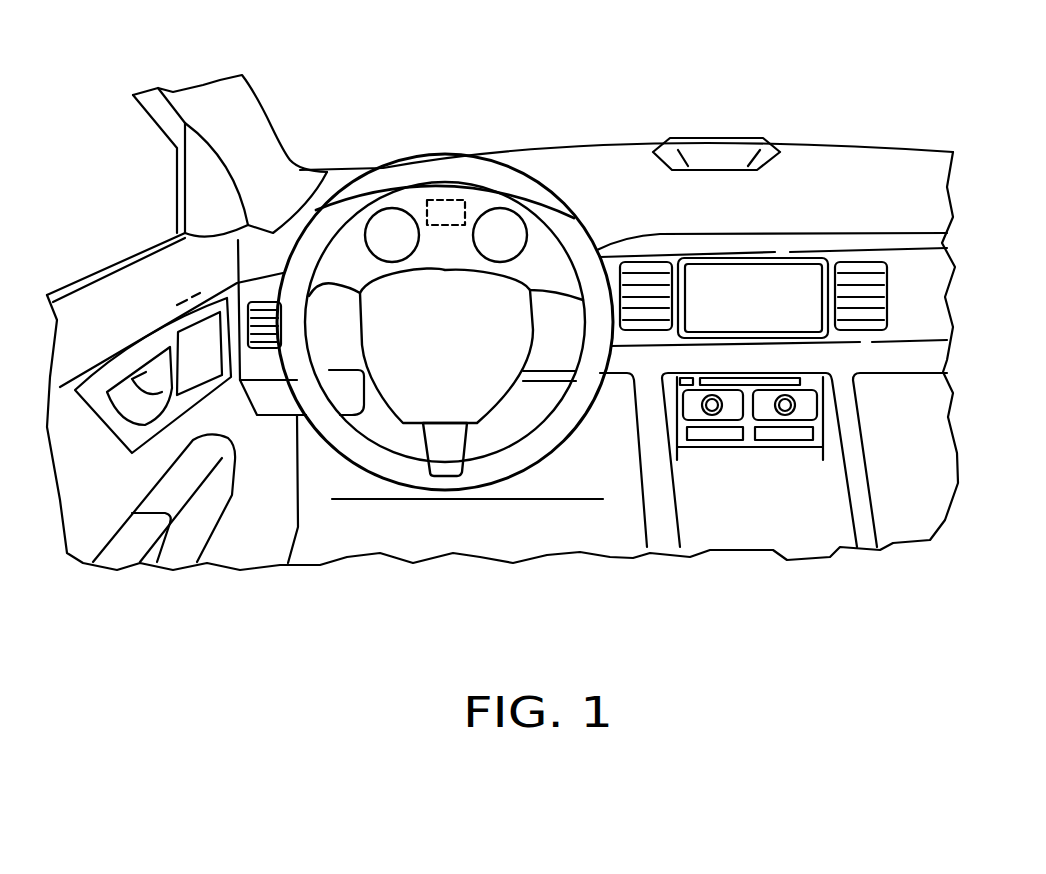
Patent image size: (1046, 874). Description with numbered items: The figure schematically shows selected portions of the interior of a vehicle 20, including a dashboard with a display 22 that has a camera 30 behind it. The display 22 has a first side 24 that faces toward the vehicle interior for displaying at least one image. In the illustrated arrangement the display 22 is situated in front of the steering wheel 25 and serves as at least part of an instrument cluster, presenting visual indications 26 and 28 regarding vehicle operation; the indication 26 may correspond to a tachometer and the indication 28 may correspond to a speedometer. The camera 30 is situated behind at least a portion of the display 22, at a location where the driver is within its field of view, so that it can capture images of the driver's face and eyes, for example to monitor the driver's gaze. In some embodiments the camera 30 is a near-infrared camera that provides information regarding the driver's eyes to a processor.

The vehicle 20 is at (857, 136).
The display 22 is at (472, 211).
The first side 24 is at (538, 250).
The steering wheel 25 is at (543, 447).
The visual indication 26 is at (380, 228).
The visual indication 28 is at (508, 228).
The camera 30 is at (443, 200).